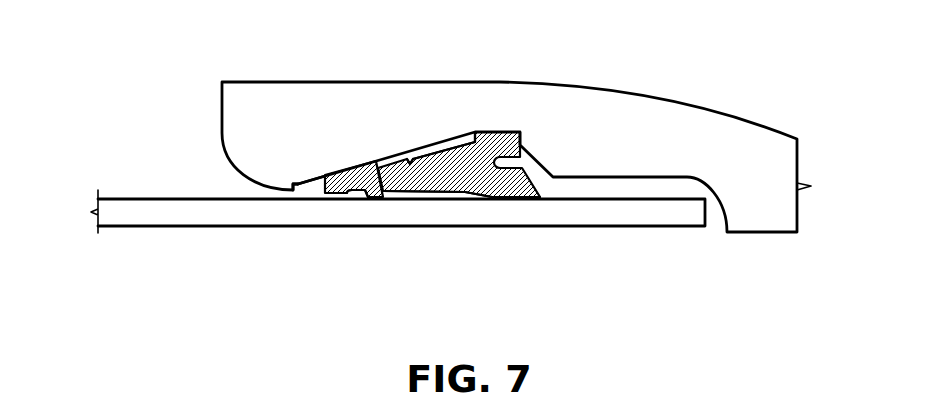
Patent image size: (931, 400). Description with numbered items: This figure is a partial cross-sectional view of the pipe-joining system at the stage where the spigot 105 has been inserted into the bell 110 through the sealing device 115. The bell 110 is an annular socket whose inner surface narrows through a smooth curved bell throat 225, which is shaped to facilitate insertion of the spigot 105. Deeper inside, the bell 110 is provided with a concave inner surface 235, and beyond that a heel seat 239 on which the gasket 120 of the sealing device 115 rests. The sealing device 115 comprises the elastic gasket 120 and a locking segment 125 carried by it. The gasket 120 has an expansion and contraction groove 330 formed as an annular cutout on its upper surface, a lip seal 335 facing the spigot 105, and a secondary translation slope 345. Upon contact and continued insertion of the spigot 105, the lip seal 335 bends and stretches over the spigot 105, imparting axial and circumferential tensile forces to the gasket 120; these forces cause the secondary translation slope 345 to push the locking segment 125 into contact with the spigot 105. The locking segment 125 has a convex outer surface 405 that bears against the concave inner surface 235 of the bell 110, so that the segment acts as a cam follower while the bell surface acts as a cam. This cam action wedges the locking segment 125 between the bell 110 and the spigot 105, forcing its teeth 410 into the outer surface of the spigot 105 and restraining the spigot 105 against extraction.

The spigot 105 is at (667, 217).
The bell 110 is at (726, 110).
The sealing device 115 is at (413, 191).
The gasket 120 is at (452, 197).
The locking segment 125 is at (314, 177).
The bell throat 225 is at (298, 186).
The concave inner surface 235 is at (408, 157).
The heel seat 239 is at (525, 136).
The expansion and contraction groove 330 is at (418, 151).
The lip seal 335 is at (493, 200).
The secondary translation slope 345 is at (474, 141).
The outer surface 405 is at (353, 175).
The teeth 410 is at (370, 197).